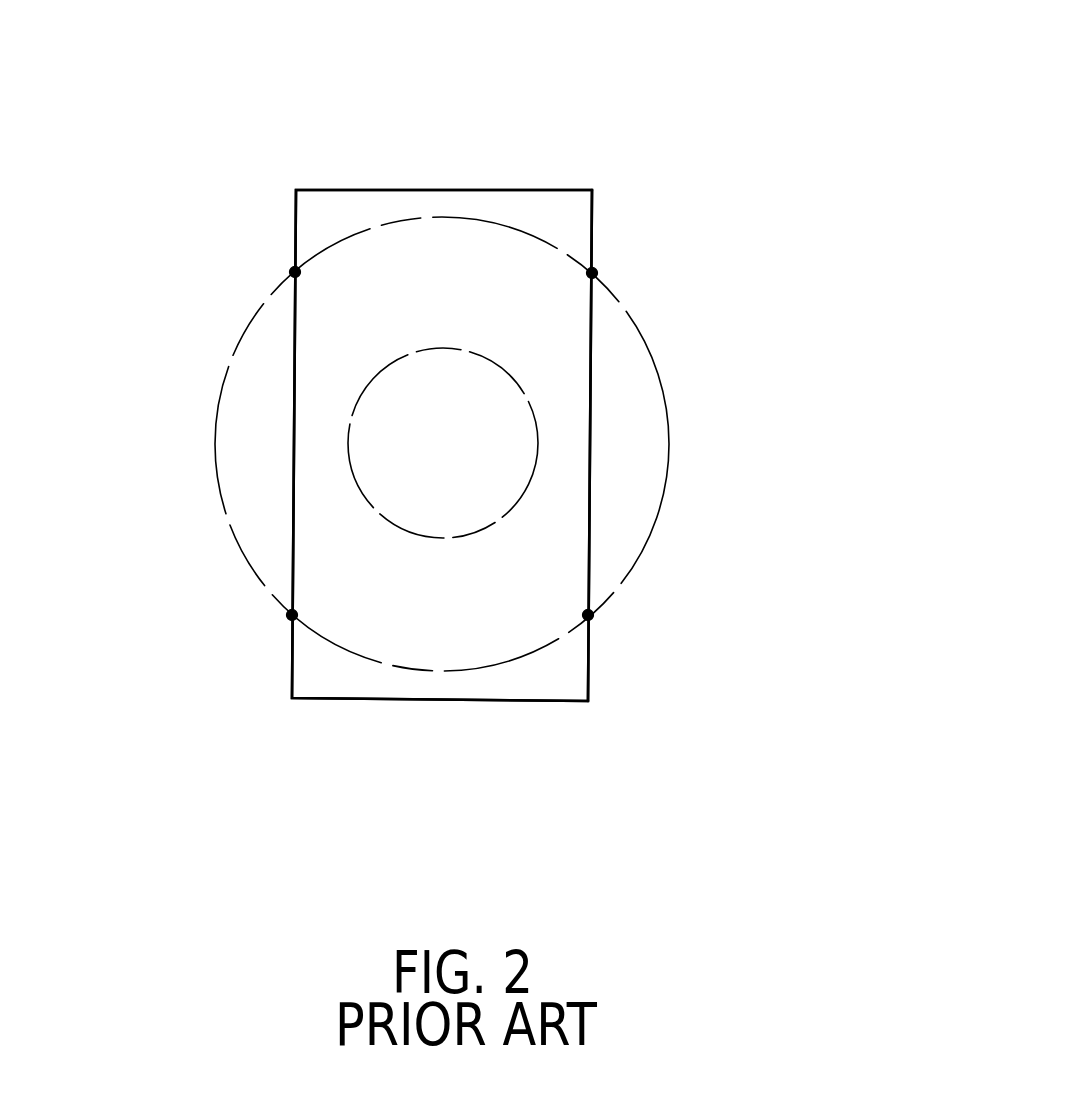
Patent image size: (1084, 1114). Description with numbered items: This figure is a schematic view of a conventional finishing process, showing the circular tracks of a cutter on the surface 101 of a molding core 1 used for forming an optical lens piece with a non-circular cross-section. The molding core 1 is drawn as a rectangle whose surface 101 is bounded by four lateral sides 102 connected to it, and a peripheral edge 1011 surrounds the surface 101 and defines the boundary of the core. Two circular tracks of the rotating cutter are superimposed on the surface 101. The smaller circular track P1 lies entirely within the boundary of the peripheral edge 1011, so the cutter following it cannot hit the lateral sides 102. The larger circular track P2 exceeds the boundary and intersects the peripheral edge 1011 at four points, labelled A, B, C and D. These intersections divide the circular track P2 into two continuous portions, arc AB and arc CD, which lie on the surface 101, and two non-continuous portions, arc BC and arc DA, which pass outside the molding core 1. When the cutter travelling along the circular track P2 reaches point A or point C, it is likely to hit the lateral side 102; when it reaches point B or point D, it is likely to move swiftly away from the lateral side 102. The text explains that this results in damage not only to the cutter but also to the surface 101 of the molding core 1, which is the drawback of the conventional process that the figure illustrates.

The molding core 1 is at (462, 182).
The surface 101 is at (552, 215).
The lateral sides 102 is at (378, 190).
The peripheral edge 1011 is at (593, 435).
The circular track P1 is at (490, 363).
The circular track P2 is at (653, 535).
The point A is at (283, 256).
The point B is at (605, 256).
The point C is at (602, 635).
The point D is at (279, 635).